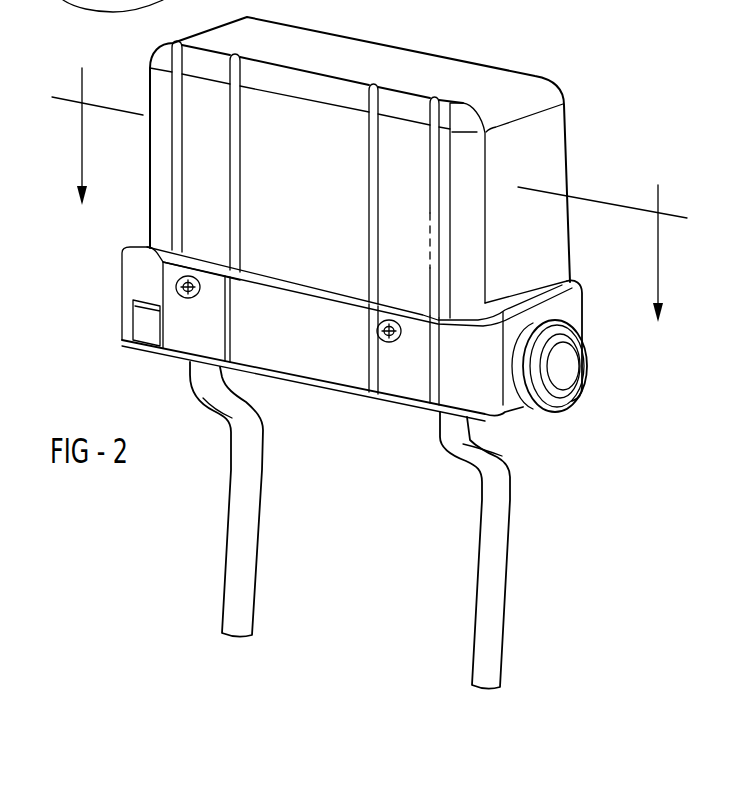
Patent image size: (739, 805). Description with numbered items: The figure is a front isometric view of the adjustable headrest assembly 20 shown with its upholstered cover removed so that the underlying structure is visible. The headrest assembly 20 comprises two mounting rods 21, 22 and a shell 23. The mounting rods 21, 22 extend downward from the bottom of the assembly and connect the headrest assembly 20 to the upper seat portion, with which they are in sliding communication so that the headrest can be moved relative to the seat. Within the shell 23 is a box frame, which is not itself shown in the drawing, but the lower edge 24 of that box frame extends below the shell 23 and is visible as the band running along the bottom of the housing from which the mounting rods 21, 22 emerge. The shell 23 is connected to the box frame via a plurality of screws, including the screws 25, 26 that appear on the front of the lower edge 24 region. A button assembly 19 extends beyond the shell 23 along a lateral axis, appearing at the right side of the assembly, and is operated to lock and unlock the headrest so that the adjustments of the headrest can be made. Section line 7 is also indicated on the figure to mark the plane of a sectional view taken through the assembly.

The section line for FIG. 7 is at (369, 212).
The button assembly 19 is at (593, 405).
The adjustable headrest assembly 20 is at (518, 45).
The mounting rod 21 is at (250, 490).
The mounting rod 22 is at (487, 548).
The shell 23 is at (465, 72).
The lower edge 24 is at (122, 350).
The screw 25 is at (184, 276).
The screw 26 is at (385, 319).